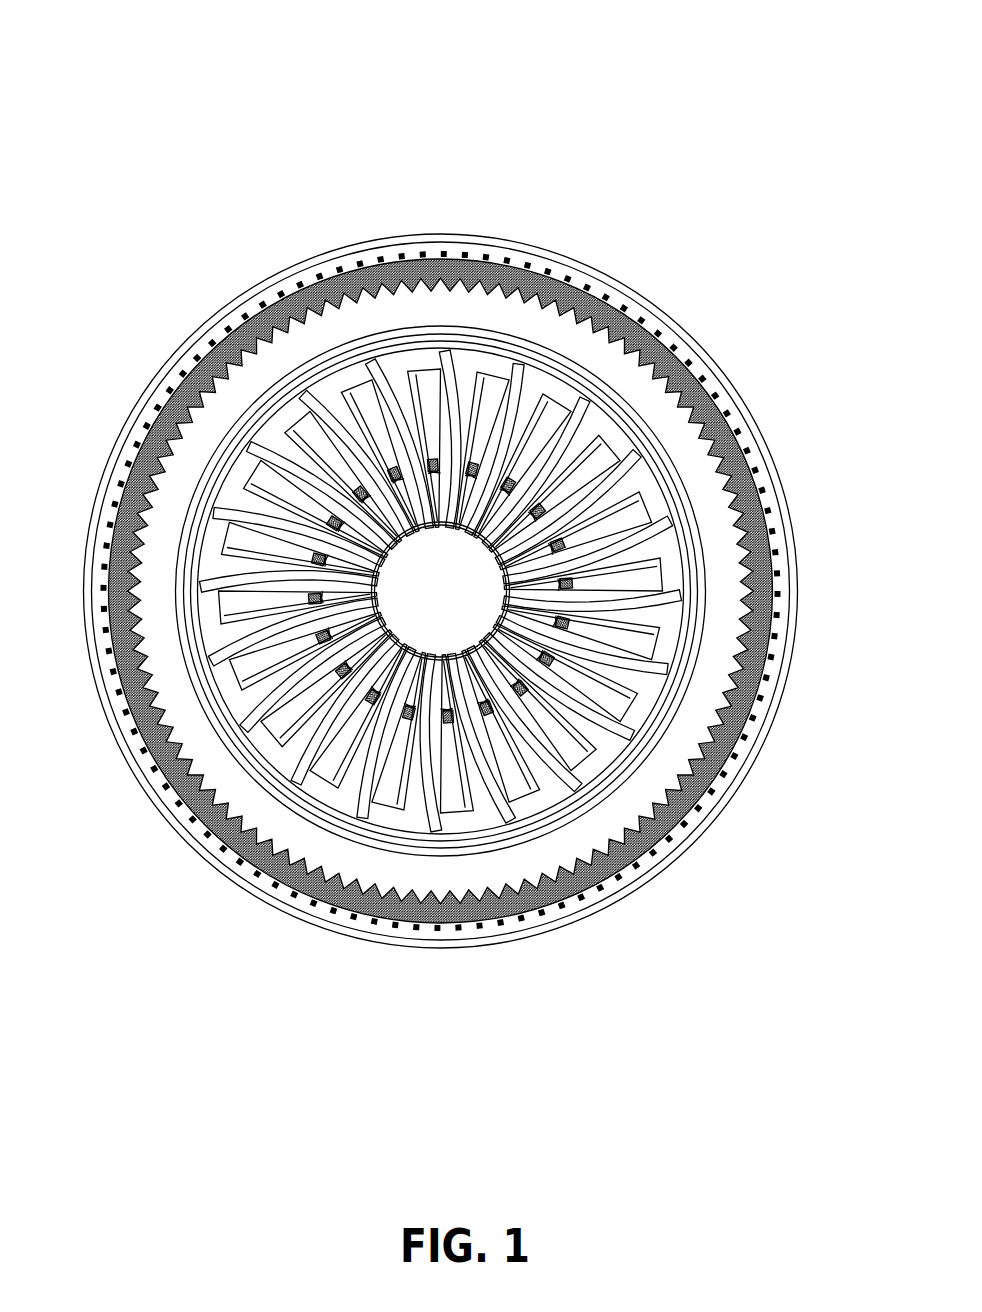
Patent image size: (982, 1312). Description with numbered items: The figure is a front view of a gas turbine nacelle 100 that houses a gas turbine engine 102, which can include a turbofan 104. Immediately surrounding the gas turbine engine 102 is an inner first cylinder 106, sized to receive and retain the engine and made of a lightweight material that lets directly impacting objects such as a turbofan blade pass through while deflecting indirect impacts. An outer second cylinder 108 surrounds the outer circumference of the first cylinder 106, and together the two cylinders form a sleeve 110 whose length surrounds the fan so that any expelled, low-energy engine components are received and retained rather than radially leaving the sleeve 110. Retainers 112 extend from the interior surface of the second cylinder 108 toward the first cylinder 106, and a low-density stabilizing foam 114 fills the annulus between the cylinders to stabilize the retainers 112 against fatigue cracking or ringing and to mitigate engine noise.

The gas turbine nacelle 100 is at (105, 88).
The gas turbine engine 102 is at (440, 591).
The turbofan 104 is at (270, 492).
The first cylinder 106 is at (678, 710).
The second cylinder 108 is at (767, 716).
The sleeve 110 is at (516, 591).
The retainers 112 is at (602, 912).
The stabilizing foam 114 is at (453, 892).